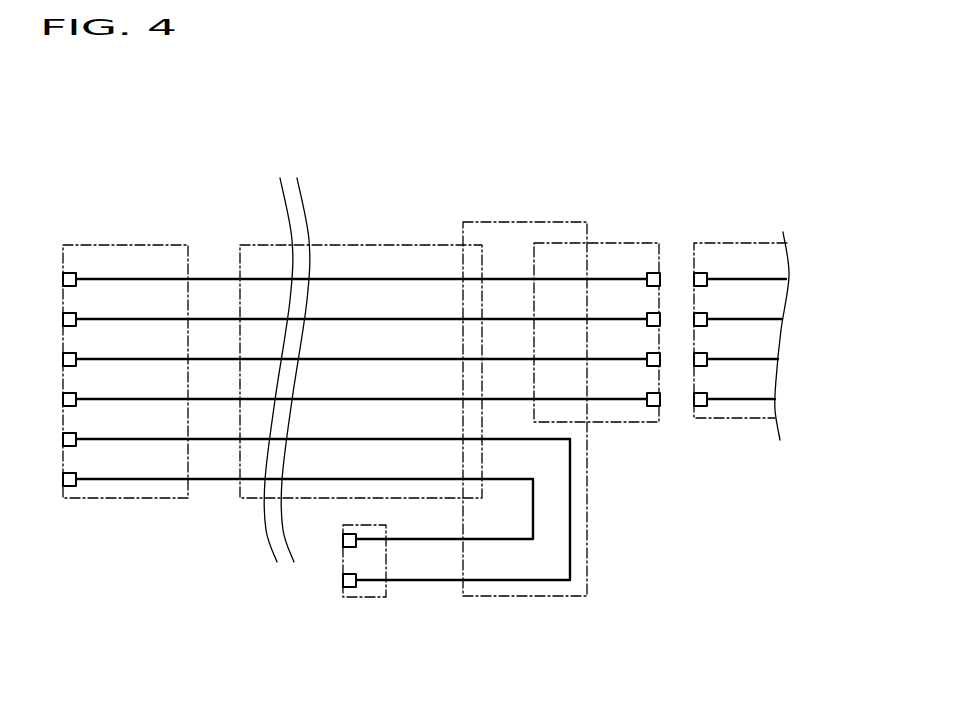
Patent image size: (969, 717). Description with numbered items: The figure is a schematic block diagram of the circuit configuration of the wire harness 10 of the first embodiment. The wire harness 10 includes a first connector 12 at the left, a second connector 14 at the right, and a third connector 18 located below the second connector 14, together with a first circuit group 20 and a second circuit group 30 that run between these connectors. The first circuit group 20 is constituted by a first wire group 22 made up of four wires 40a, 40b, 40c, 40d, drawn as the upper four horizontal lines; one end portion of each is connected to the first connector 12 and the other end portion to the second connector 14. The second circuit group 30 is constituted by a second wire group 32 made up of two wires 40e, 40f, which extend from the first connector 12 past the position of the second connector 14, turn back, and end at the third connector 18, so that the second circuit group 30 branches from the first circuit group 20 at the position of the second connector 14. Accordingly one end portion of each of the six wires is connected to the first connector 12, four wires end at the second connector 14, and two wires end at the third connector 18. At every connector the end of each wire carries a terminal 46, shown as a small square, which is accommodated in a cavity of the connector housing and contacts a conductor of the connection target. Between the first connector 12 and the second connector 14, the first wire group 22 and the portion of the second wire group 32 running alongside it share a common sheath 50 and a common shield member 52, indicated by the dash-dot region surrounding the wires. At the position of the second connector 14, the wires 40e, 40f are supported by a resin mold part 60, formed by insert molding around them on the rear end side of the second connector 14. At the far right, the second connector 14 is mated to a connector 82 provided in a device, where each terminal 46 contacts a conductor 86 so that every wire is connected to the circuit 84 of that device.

The wire harness 10 is at (200, 166).
The first connector 12 is at (105, 499).
The second connector 14 is at (610, 423).
The third connector 18 is at (378, 598).
The first circuit group 20 is at (361, 273).
The first wire group 22 is at (361, 273).
The second circuit group 30 is at (323, 560).
The second wire group 32 is at (323, 560).
The wire 40a is at (337, 277).
The wire 40b is at (348, 317).
The wire 40c is at (375, 357).
The wire 40d is at (392, 397).
The wire 40e is at (483, 638).
The wire 40f is at (437, 542).
The terminal 46 is at (77, 313).
The sheath 50 is at (355, 421).
The shield member 52 is at (243, 500).
The mold part 60 is at (549, 597).
The connector 82 is at (741, 326).
The circuit 84 is at (748, 361).
The conductor 86 is at (701, 313).